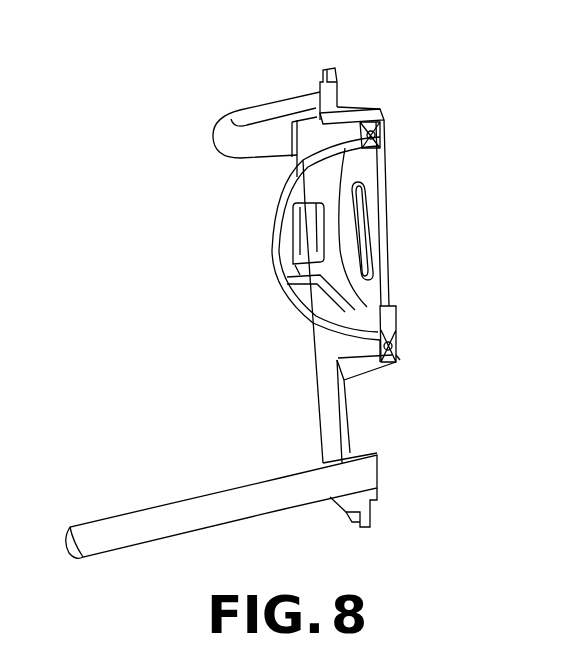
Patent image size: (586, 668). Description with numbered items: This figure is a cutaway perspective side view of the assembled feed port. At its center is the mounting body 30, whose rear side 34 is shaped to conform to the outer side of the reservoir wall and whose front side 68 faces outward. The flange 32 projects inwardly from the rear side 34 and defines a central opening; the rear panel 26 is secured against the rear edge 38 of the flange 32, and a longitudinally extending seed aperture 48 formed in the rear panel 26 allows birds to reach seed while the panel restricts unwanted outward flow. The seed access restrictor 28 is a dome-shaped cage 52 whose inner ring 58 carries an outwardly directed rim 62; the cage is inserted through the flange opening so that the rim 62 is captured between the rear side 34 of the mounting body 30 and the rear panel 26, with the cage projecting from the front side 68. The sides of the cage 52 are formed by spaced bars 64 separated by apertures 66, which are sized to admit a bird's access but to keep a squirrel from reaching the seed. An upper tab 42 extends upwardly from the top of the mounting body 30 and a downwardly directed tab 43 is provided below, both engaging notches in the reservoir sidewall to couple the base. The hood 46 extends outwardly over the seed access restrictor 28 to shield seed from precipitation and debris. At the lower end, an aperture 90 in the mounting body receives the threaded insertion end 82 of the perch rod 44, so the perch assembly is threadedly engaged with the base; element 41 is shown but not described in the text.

The rear panel 26 is at (386, 196).
The seed access restrictor 28 is at (266, 204).
The mounting body 30 is at (314, 352).
The flange 32 is at (350, 112).
The rear side 34 is at (350, 405).
The rear edge 38 is at (402, 360).
The base 41 is at (378, 468).
The upper tab 42 is at (336, 74).
The downwardly directed tab 43 is at (358, 536).
The perch rod 44 is at (128, 508).
The hood 46 is at (238, 108).
The seed aperture 48 is at (386, 240).
The dome-shaped cage 52 is at (266, 289).
The inner ring 58 is at (393, 306).
The rim 62 is at (383, 137).
The bars 64 is at (278, 244).
The apertures 66 is at (283, 300).
The front side 68 is at (328, 399).
The insertion end 82 is at (379, 502).
The aperture 90 is at (360, 446).